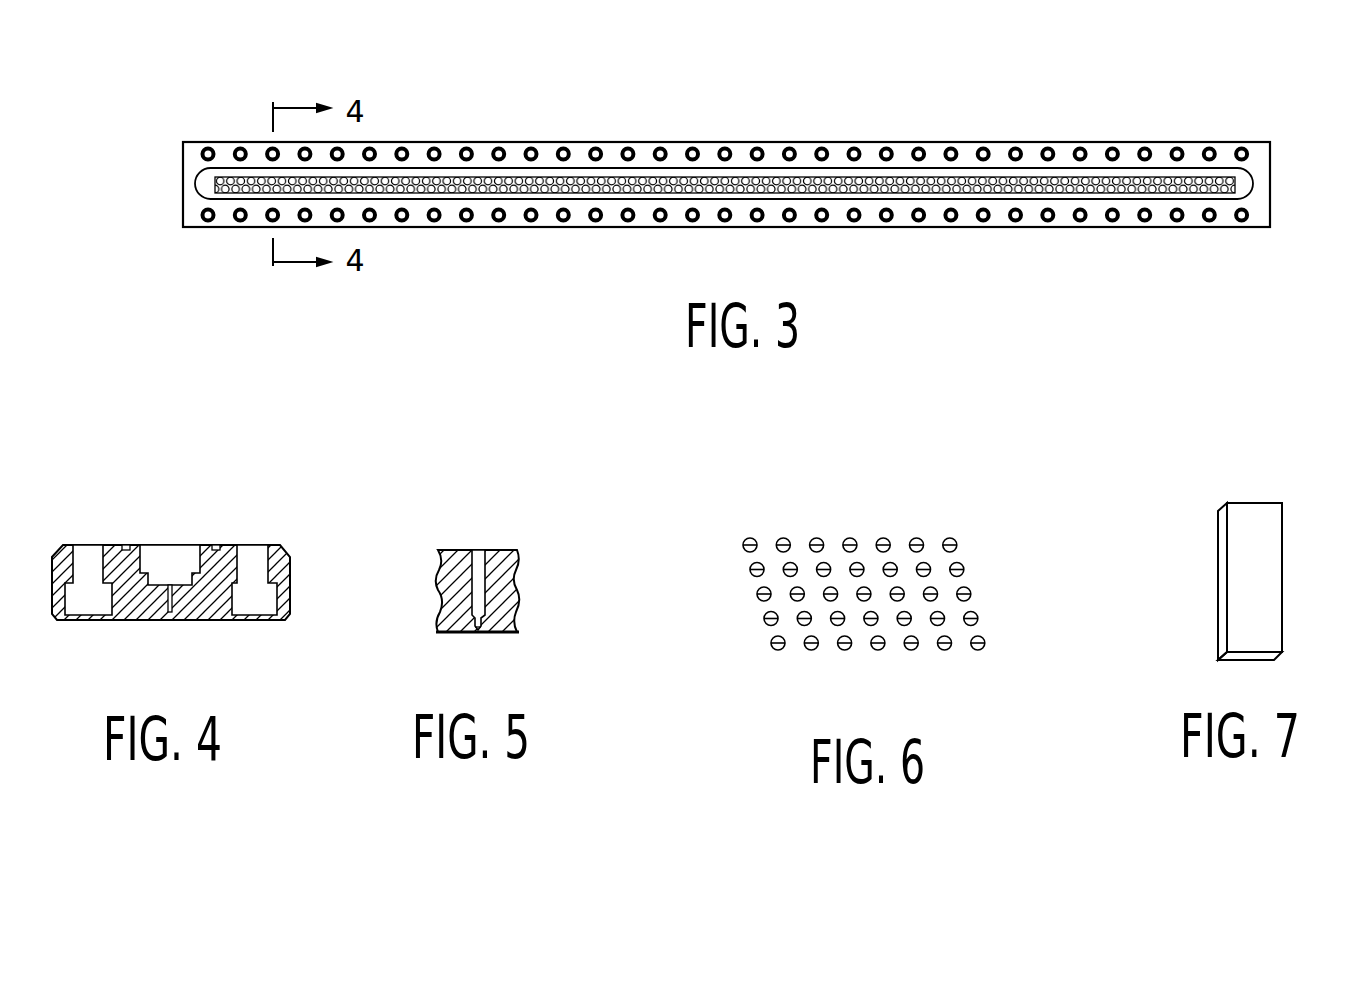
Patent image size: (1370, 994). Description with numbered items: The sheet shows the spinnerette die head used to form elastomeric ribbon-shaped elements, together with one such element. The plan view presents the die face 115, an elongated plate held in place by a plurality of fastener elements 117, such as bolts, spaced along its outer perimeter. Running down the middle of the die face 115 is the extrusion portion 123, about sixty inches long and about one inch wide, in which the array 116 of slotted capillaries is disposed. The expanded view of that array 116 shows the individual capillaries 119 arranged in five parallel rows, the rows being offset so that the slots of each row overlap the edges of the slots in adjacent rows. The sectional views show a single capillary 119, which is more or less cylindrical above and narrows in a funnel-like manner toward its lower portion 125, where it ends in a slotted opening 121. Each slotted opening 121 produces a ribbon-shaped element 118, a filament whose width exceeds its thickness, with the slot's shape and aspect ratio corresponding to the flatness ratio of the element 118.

In FIG. 3, the die face 115 is at (1228, 148).
In FIG. 3, the array of slotted capillaries 116 is at (1152, 175).
In FIG. 6, the array of slotted capillaries 116 is at (992, 577).
In FIG. 3, the fastener elements 117 is at (1049, 150).
In FIG. 4, the fastener elements 117 is at (88, 557).
In FIG. 7, the ribbon-shaped element 118 is at (1268, 623).
In FIG. 4, the capillary 119 is at (185, 549).
In FIG. 6, the capillary 119 is at (977, 649).
In FIG. 5, the slotted opening 121 is at (479, 631).
In FIG. 6, the slotted opening 121 is at (966, 594).
In FIG. 3, the extrusion portion 123 is at (1140, 188).
In FIG. 4, the lower portion 125 is at (170, 615).
In FIG. 5, the lower portion 125 is at (481, 560).